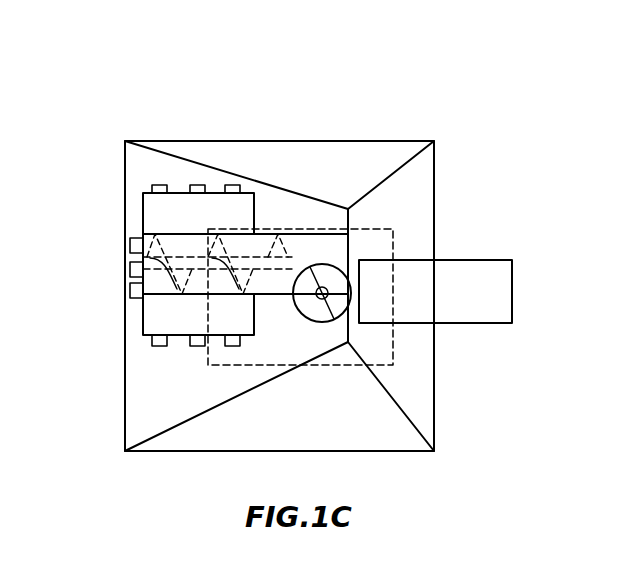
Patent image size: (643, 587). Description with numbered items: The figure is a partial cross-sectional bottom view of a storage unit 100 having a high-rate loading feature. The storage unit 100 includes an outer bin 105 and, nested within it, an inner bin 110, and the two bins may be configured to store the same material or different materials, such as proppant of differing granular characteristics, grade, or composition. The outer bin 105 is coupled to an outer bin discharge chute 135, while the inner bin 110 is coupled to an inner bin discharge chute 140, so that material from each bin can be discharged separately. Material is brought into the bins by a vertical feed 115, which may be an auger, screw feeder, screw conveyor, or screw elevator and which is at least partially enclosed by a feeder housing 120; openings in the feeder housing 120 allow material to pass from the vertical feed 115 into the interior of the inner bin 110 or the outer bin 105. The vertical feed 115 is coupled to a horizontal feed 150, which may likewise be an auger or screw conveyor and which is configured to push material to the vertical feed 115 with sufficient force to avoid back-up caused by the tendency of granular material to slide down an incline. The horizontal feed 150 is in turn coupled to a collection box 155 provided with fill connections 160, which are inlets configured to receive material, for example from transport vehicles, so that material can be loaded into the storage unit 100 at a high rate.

The storage unit 100 is at (485, 80).
The outer bin 105 is at (435, 192).
The inner bin 110 is at (372, 229).
The vertical feed 115 is at (305, 322).
The feeder housing 120 is at (321, 323).
The outer bin discharge chute 135 is at (473, 323).
The inner bin discharge chute 140 is at (512, 280).
The horizontal feed 150 is at (153, 297).
The collection box 155 is at (142, 218).
The fill connections 160 is at (131, 247).